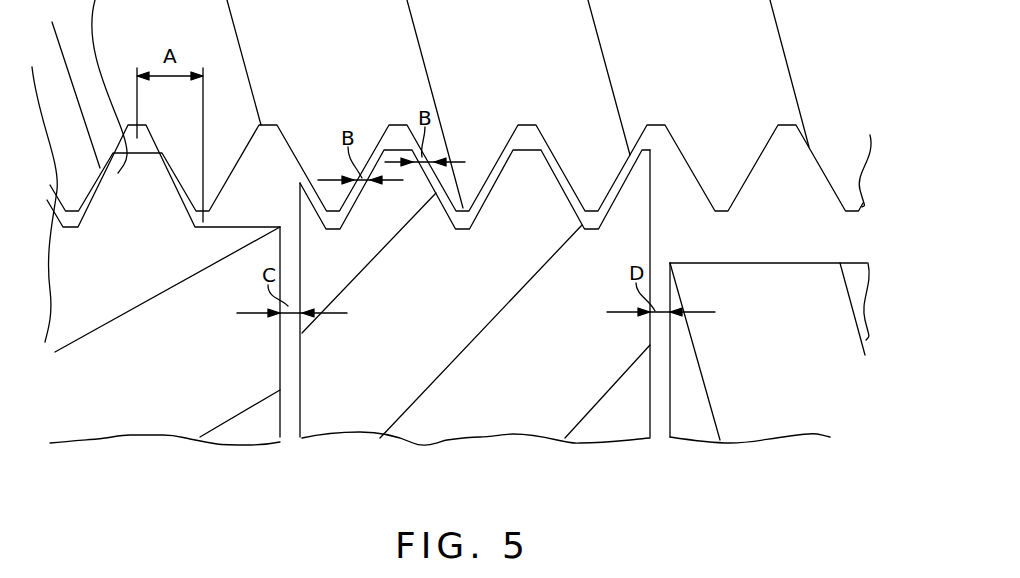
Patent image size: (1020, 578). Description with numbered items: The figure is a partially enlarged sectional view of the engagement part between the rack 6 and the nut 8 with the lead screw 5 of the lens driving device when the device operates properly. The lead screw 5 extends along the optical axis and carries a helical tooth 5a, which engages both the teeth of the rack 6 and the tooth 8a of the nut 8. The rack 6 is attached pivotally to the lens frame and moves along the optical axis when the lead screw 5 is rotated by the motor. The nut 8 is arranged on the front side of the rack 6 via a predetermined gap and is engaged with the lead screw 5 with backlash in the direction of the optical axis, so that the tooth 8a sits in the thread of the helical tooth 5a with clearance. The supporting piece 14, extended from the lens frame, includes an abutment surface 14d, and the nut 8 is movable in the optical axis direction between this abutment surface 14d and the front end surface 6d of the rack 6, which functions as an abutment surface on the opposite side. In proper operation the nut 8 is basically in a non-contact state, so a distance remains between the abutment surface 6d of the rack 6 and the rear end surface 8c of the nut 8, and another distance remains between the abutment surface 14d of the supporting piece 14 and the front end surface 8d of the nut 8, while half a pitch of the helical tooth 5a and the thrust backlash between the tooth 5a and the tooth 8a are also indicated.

The lead screw 5 is at (523, 53).
The helical tooth 5a is at (183, 165).
The rack 6 is at (173, 412).
The front end surface 6d is at (282, 363).
The nut 8 is at (490, 408).
The tooth 8a is at (523, 160).
The rear end surface 8c is at (305, 212).
The front end surface 8d is at (650, 395).
The supporting piece 14 is at (775, 357).
The abutment surface 14d is at (670, 338).